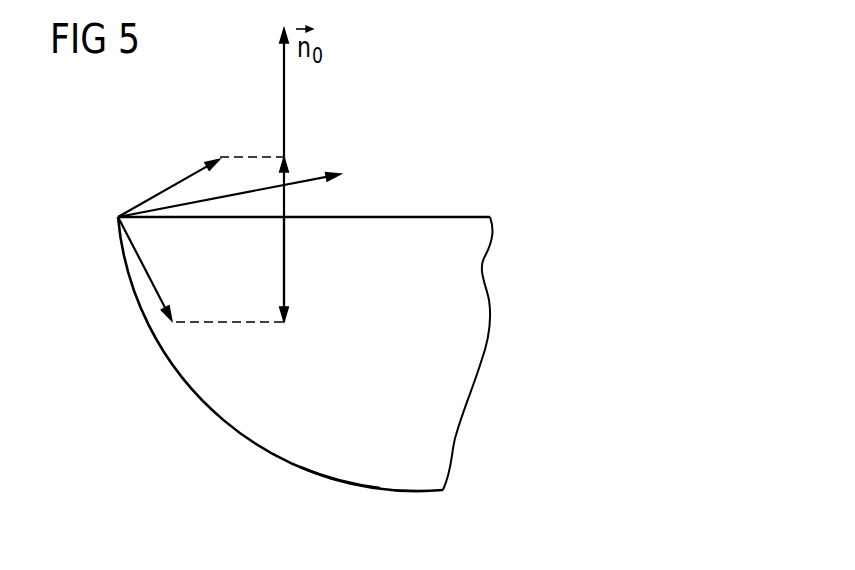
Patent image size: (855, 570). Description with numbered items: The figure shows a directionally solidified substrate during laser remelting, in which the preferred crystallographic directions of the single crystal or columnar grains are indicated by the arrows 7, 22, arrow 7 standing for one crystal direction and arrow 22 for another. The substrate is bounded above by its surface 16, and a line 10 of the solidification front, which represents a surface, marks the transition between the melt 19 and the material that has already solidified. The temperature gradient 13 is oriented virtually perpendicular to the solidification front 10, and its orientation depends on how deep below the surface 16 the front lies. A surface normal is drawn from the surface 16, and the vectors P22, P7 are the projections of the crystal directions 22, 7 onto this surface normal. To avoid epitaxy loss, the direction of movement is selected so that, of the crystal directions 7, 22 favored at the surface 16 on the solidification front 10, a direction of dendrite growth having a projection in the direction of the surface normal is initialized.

The arrow indicating preferred crystallographic direction 7 is at (149, 275).
The line of a solidification front 10 is at (178, 366).
The temperature gradient 13 is at (305, 179).
The surface 16 is at (440, 217).
The melt 19 is at (320, 423).
The arrow indicating preferred crystallographic direction 22 is at (170, 186).
The projection of crystal direction 22 onto surface normal P22 is at (286, 202).
The projection of crystal direction 7 onto surface normal P7 is at (287, 262).